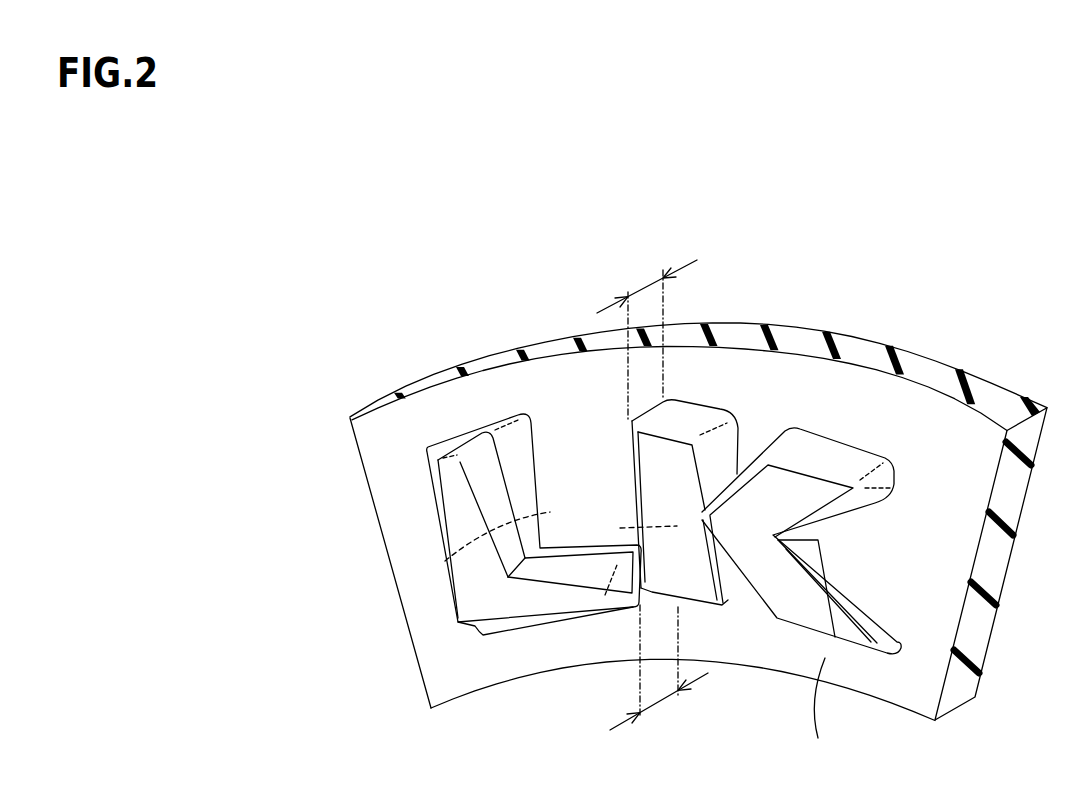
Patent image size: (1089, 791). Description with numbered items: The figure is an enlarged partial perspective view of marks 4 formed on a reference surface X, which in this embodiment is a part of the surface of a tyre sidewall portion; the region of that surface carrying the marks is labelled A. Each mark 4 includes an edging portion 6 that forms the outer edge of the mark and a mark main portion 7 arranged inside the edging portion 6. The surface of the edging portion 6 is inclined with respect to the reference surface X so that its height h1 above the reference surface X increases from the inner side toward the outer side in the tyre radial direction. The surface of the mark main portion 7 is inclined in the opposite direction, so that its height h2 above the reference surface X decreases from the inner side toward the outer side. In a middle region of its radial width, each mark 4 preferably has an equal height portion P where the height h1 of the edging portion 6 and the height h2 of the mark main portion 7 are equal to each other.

The mark 4 is at (415, 443).
The decorative region A is at (450, 417).
The mark main portion 7 is at (680, 493).
The edging portion 6 is at (671, 436).
The height of the surface of the edging portion h1 is at (647, 333).
The height of the surface of the mark main portion h2 is at (659, 674).
The equal height portion P is at (549, 545).
The reference surface X is at (823, 713).